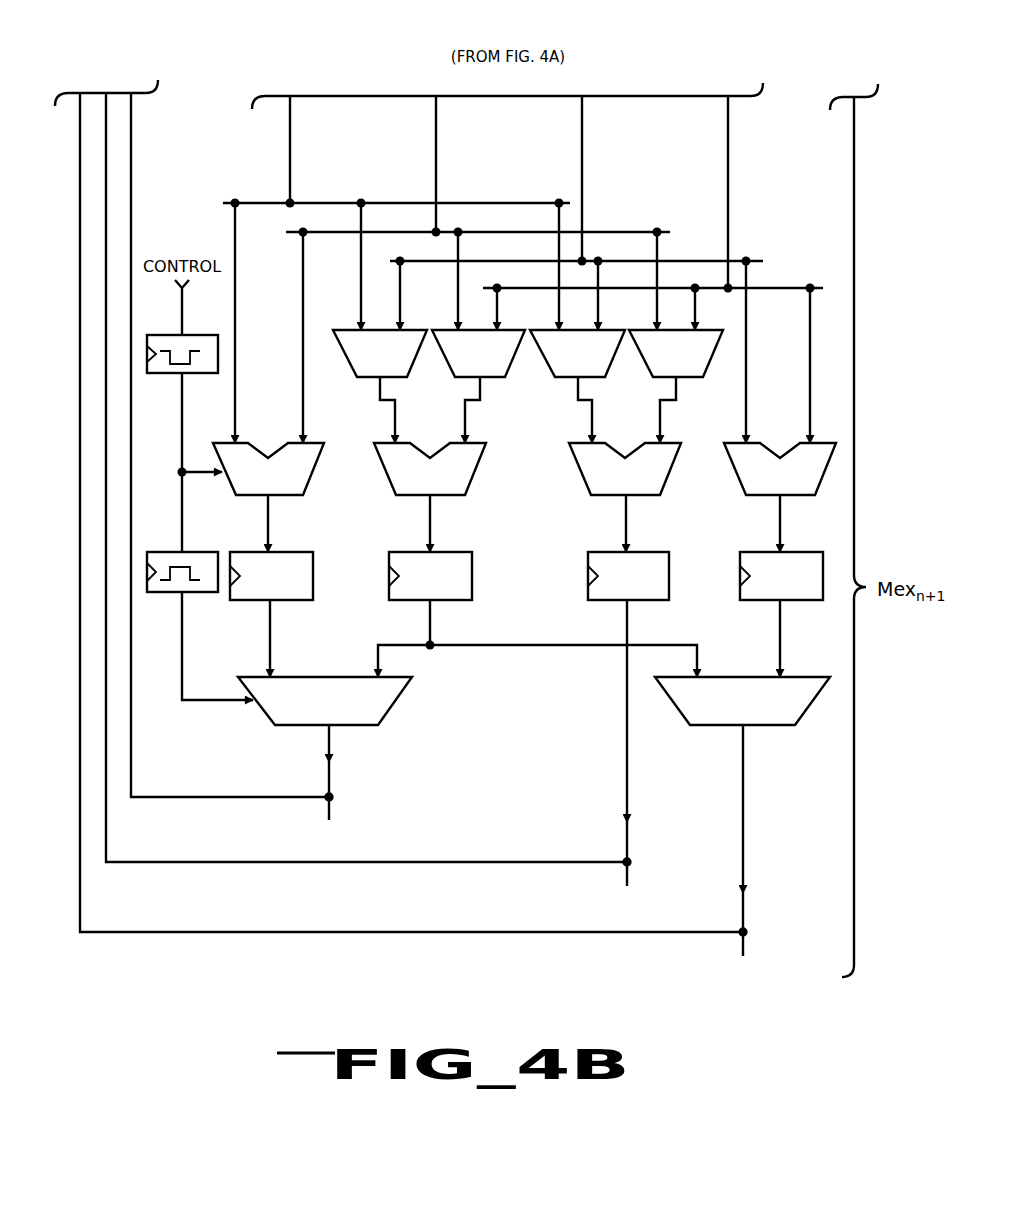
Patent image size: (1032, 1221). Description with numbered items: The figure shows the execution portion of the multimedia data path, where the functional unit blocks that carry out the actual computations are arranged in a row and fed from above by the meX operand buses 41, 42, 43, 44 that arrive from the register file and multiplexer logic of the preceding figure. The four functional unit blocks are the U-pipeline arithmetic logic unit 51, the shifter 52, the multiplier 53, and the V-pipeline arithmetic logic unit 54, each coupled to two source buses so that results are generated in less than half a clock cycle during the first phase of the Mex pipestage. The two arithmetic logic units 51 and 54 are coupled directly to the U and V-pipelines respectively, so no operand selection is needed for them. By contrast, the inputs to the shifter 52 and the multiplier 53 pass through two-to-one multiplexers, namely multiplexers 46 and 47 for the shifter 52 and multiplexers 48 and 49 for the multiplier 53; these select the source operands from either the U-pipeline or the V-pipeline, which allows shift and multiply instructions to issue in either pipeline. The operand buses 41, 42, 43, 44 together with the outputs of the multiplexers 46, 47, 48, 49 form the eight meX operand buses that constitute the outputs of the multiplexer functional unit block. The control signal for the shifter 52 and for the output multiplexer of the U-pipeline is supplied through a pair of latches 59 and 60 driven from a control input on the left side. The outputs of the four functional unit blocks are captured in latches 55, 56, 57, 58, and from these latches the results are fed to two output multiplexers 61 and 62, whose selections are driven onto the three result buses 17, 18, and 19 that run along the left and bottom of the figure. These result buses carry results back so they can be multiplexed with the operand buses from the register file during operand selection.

The result bus 17 is at (80, 190).
The result bus 18 is at (106, 171).
The result bus 19 is at (131, 212).
The meX operand bus 41 is at (290, 148).
The meX operand bus 42 is at (436, 148).
The meX operand bus 43 is at (582, 148).
The meX operand bus 44 is at (728, 148).
The 2:1 multiplexer 46 is at (343, 352).
The 2:1 multiplexer 47 is at (445, 358).
The 2:1 multiplexer 48 is at (545, 358).
The 2:1 multiplexer 49 is at (708, 358).
The U-pipeline arithmetic logic unit 51 is at (240, 497).
The shifter 52 is at (400, 497).
The multiplier 53 is at (597, 497).
The V-pipeline arithmetic logic unit 54 is at (746, 497).
The latch 55 is at (243, 603).
The latch 56 is at (398, 603).
The latch 57 is at (598, 603).
The latch 58 is at (752, 603).
The latch 59 is at (164, 375).
The latch 60 is at (170, 594).
The multiplexer 61 is at (403, 713).
The multiplexer 62 is at (803, 712).